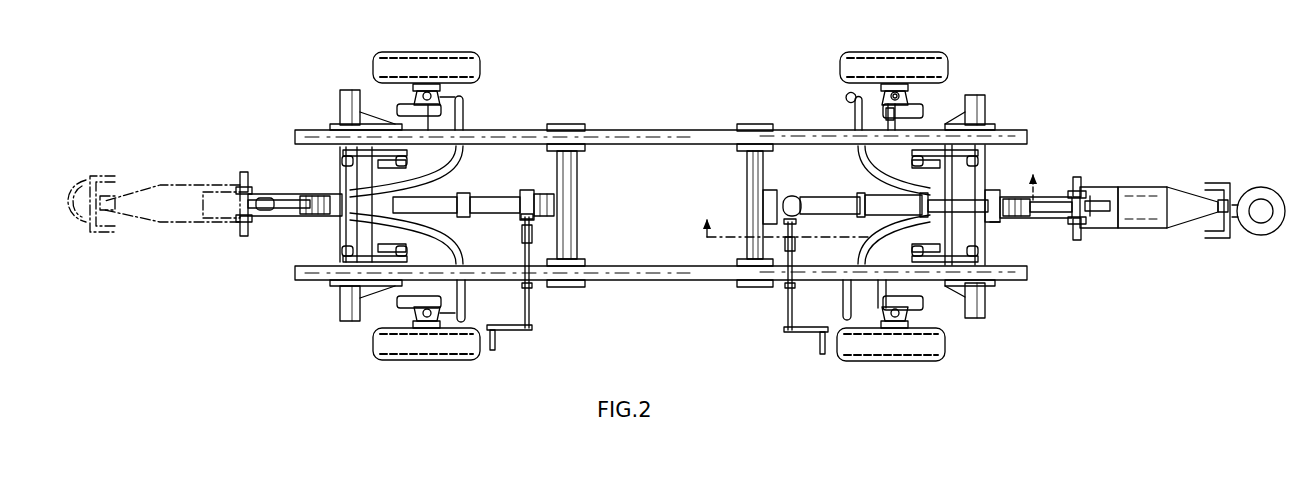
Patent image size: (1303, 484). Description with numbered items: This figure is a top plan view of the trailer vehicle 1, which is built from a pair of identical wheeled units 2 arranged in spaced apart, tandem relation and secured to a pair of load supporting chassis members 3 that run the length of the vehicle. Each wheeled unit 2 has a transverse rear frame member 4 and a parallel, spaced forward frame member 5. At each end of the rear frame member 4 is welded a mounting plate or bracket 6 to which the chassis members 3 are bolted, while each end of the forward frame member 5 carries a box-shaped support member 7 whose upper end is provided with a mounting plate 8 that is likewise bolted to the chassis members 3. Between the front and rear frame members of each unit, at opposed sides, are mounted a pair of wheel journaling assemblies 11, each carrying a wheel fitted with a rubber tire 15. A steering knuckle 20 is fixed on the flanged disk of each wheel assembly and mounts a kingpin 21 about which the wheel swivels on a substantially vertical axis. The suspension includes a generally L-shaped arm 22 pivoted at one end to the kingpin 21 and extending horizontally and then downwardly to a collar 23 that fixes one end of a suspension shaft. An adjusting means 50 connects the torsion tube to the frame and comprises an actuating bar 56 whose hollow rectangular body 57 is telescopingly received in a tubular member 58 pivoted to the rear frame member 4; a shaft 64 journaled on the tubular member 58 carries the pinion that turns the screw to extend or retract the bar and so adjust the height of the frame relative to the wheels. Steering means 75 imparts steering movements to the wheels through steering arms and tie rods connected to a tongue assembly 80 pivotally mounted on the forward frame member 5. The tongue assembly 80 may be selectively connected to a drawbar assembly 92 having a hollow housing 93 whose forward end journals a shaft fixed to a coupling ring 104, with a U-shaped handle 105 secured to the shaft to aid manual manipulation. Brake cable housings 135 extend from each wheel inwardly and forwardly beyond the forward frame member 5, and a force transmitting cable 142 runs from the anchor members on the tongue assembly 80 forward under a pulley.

The trailer vehicle 1 is at (622, 100).
The wheeled unit 2 is at (350, 333).
The load supporting chassis member 3 is at (683, 142).
The rear frame member 4 is at (748, 165).
The forward frame member 5 is at (867, 191).
The mounting plate or bracket 6 is at (757, 124).
The box-shaped support member 7 is at (1000, 225).
The mounting plate 8 is at (332, 125).
The wheel journaling assembly 11 is at (838, 95).
The tire 15 is at (477, 342).
The steering knuckle 20 is at (856, 105).
The kingpin 21 is at (900, 100).
The L-shaped arm 22 is at (893, 118).
The collar 23 is at (950, 105).
The adjusting means 50 is at (780, 310).
The actuating bar 56 is at (990, 201).
The hollow rectangular body 57 is at (912, 205).
The tubular member 58 is at (822, 205).
The shaft 64 is at (797, 243).
The steering means 75 is at (315, 220).
The tongue assembly 80 is at (268, 190).
The drawbar assembly 92 is at (1135, 178).
The hollow housing 93 is at (1143, 222).
The coupling ring 104 is at (1255, 190).
The U-shaped handle 105 is at (1222, 238).
The cable housing 135 is at (870, 173).
The force transmitting cable 142 is at (1097, 212).